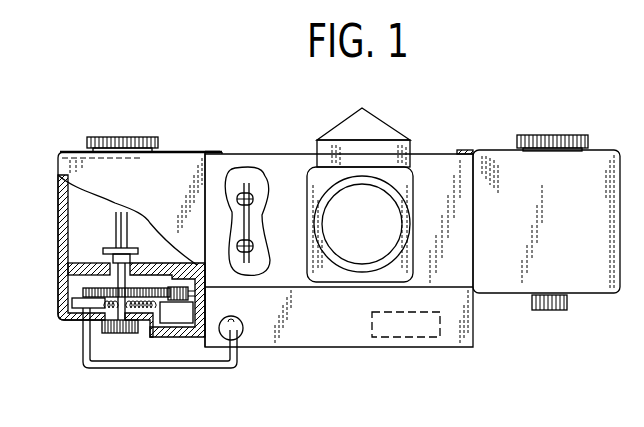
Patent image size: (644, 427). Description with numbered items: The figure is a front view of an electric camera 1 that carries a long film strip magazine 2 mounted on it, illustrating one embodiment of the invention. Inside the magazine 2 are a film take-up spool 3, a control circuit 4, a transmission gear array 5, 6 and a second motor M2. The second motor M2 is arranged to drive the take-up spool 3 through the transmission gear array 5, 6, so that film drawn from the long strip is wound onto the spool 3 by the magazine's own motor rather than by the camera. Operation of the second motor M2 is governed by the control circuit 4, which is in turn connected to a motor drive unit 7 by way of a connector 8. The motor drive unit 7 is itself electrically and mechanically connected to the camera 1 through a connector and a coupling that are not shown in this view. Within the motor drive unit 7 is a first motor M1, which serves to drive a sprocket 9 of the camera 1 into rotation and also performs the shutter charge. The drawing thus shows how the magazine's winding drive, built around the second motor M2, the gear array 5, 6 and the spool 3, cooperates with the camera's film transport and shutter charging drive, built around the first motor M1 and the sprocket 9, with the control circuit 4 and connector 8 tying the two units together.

The camera 1 is at (263, 158).
The long film strip magazine 2 is at (180, 165).
The film take-up spool 3 is at (115, 231).
The control circuit 4 is at (72, 303).
The transmission gear array 5 is at (97, 288).
The transmission gear array 6 is at (131, 256).
The motor drive unit 7 is at (339, 342).
The connector 8 is at (220, 369).
The sprocket 9 is at (249, 218).
The first motor M1 is at (406, 324).
The second motor M2 is at (183, 287).